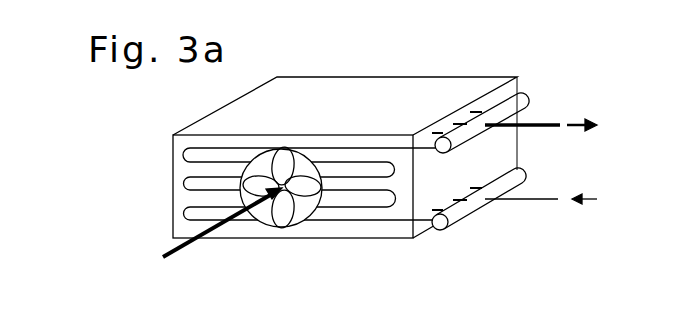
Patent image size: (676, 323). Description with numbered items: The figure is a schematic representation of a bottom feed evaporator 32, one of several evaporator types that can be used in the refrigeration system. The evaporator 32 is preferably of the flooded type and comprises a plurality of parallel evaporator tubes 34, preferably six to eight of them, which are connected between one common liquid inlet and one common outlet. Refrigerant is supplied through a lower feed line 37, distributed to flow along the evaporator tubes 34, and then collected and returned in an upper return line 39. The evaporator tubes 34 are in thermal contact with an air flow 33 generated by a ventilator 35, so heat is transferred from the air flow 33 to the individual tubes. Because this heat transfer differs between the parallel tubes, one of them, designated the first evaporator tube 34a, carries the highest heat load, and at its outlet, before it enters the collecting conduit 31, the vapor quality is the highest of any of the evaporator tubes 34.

The collecting conduit 31 is at (517, 98).
The evaporator 32 is at (475, 52).
The air flow 33 is at (208, 230).
The evaporator tubes 34 is at (158, 166).
The first evaporator tube 34a is at (368, 148).
The ventilator 35 is at (293, 227).
The lower feed line 37 is at (517, 200).
The upper return line 39 is at (533, 124).